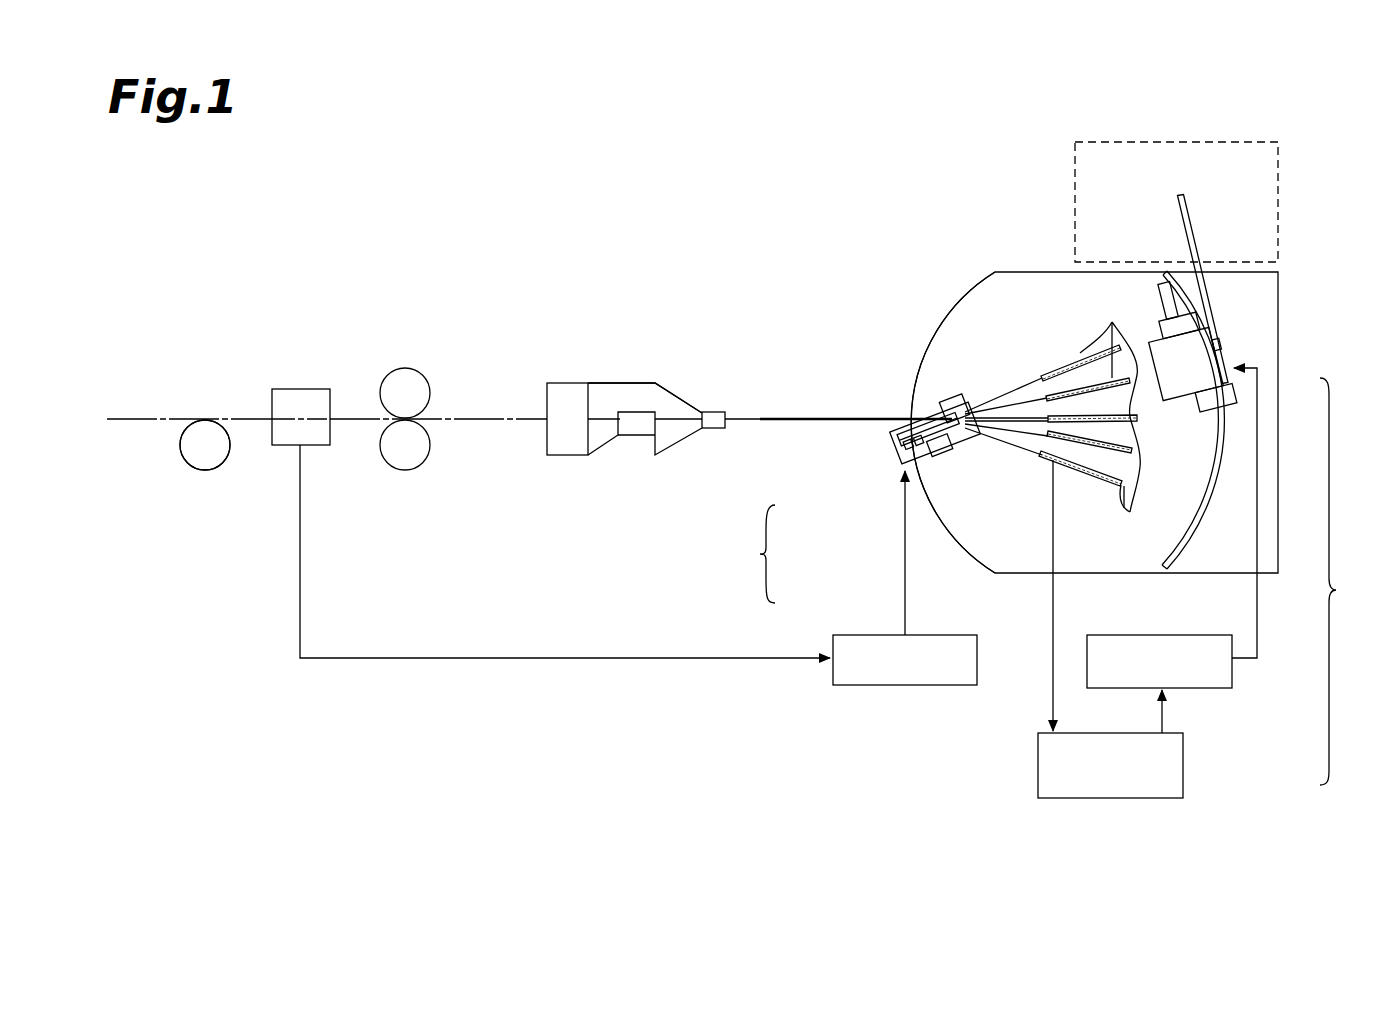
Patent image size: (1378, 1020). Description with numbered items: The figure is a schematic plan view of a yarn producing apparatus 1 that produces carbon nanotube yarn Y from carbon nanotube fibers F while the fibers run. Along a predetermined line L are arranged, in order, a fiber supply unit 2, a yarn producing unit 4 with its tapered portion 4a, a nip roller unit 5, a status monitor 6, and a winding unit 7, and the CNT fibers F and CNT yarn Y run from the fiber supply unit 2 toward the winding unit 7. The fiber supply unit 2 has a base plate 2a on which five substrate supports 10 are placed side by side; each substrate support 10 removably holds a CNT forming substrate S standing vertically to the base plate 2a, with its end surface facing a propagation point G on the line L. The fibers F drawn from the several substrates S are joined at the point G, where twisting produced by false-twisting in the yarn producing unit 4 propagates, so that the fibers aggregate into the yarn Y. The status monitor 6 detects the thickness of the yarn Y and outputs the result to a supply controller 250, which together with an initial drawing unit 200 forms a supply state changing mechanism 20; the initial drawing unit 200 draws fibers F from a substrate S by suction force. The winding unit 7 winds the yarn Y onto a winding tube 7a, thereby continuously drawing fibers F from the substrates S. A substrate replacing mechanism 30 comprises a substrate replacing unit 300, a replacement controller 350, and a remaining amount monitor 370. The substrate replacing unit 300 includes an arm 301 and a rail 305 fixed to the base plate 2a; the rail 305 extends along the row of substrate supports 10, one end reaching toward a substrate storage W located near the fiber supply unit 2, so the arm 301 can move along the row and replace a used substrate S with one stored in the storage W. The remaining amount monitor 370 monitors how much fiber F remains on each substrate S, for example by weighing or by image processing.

The yarn producing apparatus 1 is at (757, 232).
The fiber supply unit 2 is at (994, 270).
The base plate 2a is at (970, 318).
The yarn producing unit 4 is at (563, 381).
The tapered portion of opening device 4a is at (645, 383).
The nip roller unit 5 is at (400, 366).
The status monitor 6 is at (300, 389).
The winding unit 7 is at (205, 416).
The winding tube 7a is at (182, 450).
The substrate support 10 is at (1105, 350).
The supply state changing mechanism 20 is at (750, 554).
The initial drawing unit 200 is at (895, 462).
The supply controller 250 is at (872, 635).
The substrate replacing mechanism 30 is at (1343, 581).
The substrate replacing unit 300 is at (1234, 348).
The arm 301 is at (1195, 240).
The rail 305 is at (1197, 565).
The replacement controller 350 is at (1232, 673).
The remaining amount monitor 370 is at (1183, 768).
The predetermined line L is at (148, 418).
The CNT yarn Y is at (352, 418).
The CNT fibers F is at (758, 418).
The propagation point G is at (935, 418).
The CNT forming substrate S is at (1110, 433).
The substrate storage W is at (1192, 142).